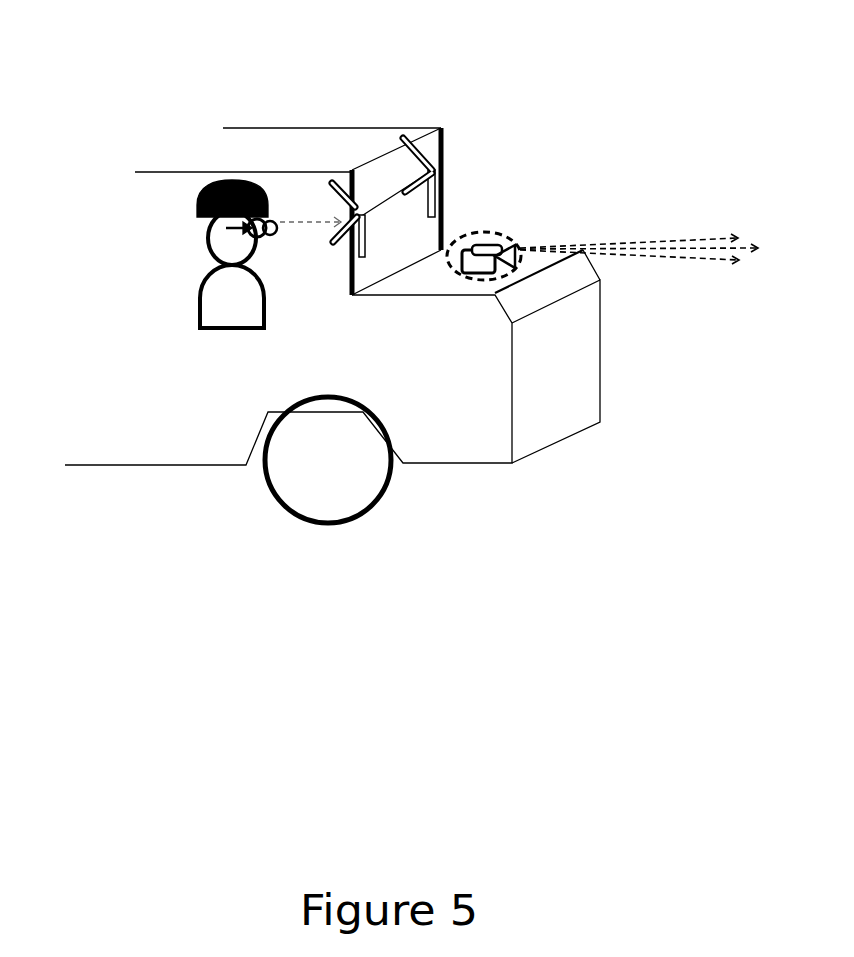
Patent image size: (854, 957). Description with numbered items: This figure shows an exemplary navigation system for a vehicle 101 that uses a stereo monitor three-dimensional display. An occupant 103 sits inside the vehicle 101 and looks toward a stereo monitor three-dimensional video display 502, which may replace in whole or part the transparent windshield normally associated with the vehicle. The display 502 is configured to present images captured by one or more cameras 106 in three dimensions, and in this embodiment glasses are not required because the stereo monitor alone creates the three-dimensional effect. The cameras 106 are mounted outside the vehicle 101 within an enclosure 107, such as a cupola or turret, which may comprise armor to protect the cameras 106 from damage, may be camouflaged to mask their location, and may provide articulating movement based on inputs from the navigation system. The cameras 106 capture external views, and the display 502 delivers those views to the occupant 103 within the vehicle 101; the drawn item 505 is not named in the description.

The vehicle 101 is at (163, 435).
The occupant 103 is at (208, 258).
The eyepiece / gaze direction 505 is at (281, 217).
The stereo monitor 3d video display 502 is at (382, 148).
The camera 106 is at (472, 235).
The enclosure 107 is at (520, 238).